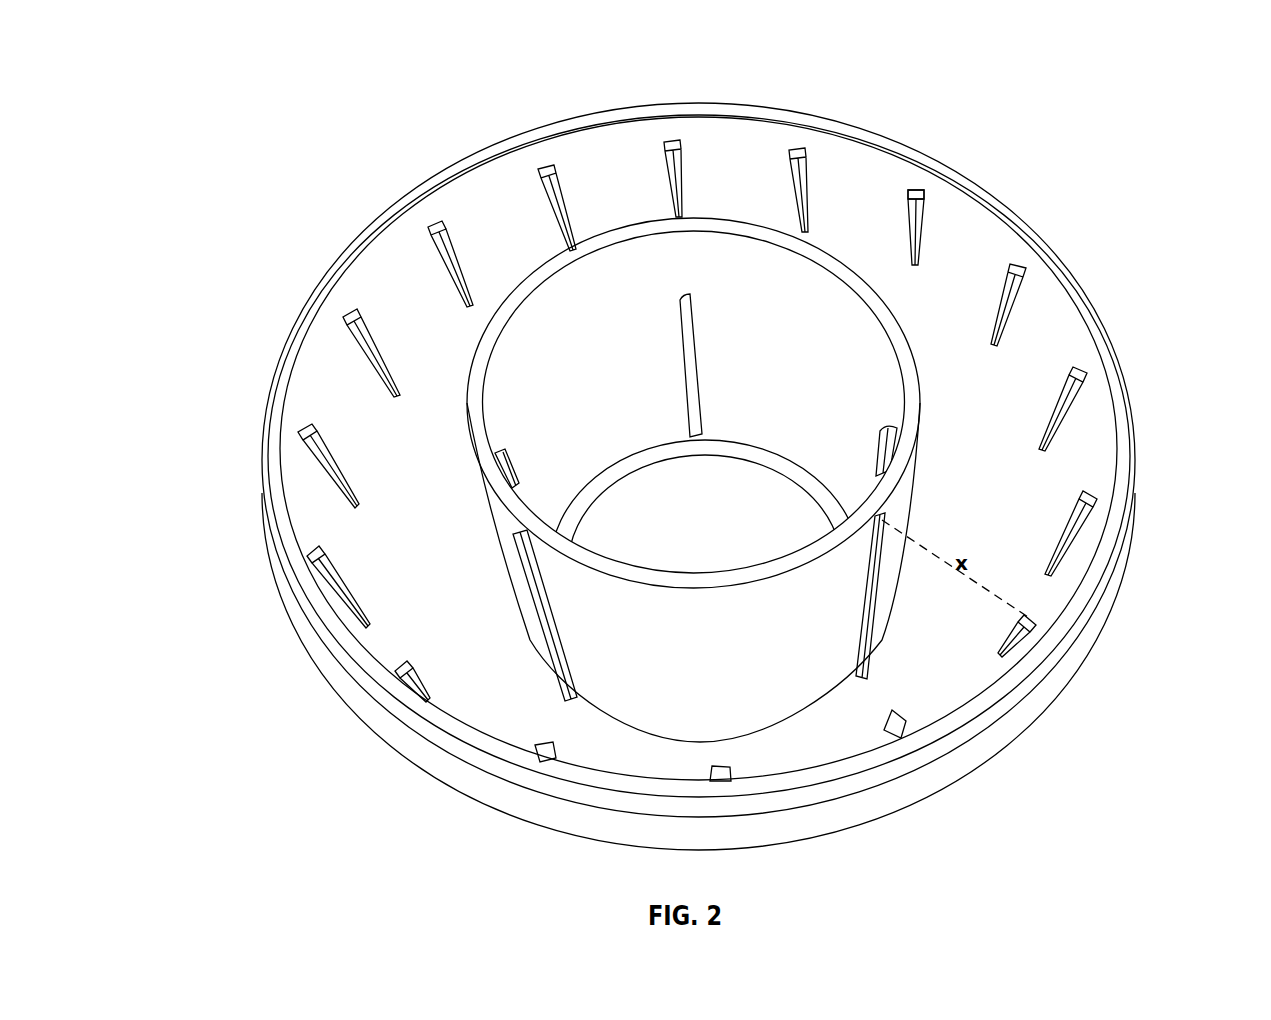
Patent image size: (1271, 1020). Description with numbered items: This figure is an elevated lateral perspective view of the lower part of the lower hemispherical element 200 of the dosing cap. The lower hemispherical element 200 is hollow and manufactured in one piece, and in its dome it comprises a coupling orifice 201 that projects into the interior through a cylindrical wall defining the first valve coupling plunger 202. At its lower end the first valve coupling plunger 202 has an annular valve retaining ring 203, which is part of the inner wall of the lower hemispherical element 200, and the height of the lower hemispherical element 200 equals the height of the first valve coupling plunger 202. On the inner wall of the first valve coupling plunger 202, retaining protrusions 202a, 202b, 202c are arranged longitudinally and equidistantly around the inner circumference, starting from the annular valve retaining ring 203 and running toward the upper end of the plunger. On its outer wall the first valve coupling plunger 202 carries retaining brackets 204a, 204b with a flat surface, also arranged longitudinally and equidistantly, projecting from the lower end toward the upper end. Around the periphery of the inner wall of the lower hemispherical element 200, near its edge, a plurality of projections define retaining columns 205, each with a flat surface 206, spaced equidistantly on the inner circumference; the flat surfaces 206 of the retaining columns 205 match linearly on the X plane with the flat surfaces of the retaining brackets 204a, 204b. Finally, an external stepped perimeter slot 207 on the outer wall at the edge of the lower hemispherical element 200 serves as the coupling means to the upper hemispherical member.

The lower hemispherical element 200 is at (611, 460).
The coupling orifice 201 is at (711, 531).
The first valve coupling plunger 202 is at (934, 374).
The retaining protrusion 202a is at (665, 318).
The retaining protrusion 202b is at (473, 451).
The retaining protrusion 202c is at (908, 445).
The annular valve retaining ring 203 is at (712, 430).
The retaining bracket 204a is at (885, 592).
The retaining bracket 204b is at (516, 607).
The retaining column 205 is at (934, 209).
The flat surface 206 is at (940, 174).
The external stepped perimeter slot 207 is at (450, 771).